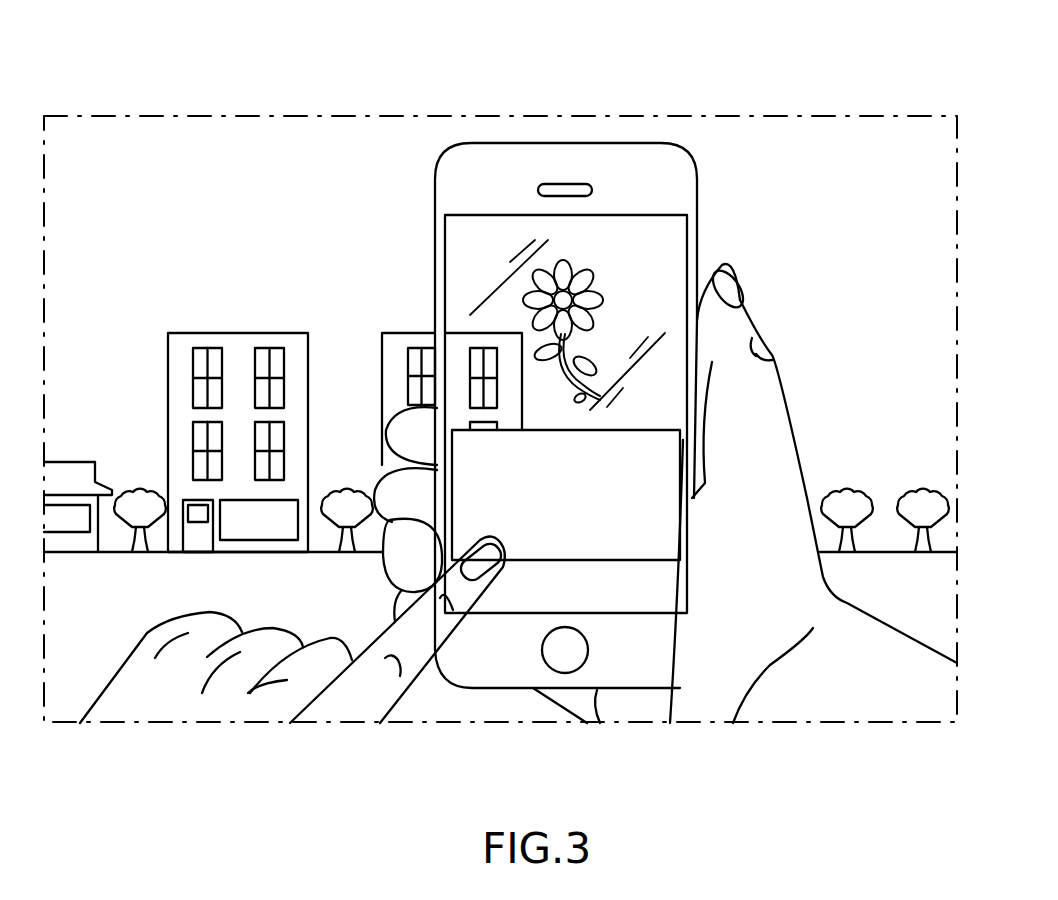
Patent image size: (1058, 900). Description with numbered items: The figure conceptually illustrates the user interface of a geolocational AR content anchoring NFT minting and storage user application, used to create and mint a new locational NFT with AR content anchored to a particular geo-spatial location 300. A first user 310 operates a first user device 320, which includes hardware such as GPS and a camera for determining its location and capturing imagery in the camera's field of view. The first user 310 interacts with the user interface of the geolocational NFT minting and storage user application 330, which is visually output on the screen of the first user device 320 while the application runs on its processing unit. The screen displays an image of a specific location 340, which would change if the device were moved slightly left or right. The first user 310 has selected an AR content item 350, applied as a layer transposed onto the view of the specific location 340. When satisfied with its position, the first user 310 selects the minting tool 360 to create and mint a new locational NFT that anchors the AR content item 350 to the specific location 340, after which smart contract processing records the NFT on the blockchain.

The geo-spatial location 300 is at (177, 103).
The first user 310 is at (768, 452).
The first user device 320 is at (522, 174).
The geolocational NFT minting and storage user application 330 is at (652, 603).
The specific location 340 is at (464, 333).
The AR content item 350 is at (638, 266).
The minting tool 360 is at (667, 460).